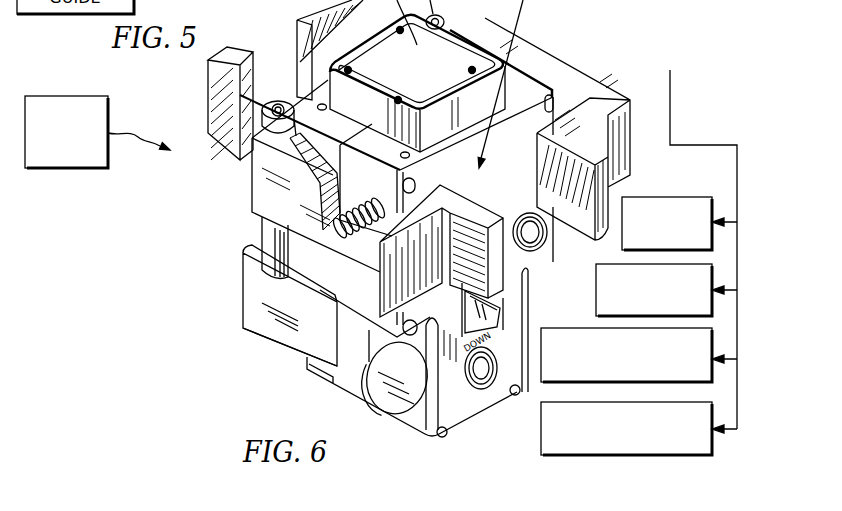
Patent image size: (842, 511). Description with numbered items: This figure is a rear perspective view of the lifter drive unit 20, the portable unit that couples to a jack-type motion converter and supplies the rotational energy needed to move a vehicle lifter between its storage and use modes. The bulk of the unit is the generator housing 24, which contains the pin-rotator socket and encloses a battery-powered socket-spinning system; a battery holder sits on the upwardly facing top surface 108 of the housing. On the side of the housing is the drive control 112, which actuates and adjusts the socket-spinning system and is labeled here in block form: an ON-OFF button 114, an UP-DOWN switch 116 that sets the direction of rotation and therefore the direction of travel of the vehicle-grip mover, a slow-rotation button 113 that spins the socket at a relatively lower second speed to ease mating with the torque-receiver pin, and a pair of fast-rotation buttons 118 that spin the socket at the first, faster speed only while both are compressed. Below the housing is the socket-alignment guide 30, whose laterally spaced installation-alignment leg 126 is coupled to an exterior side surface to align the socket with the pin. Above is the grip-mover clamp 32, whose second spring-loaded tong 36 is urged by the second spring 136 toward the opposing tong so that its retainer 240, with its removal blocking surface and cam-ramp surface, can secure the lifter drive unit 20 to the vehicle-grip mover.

The lifter drive unit 20 is at (51, 96).
The generator housing 24 is at (252, 230).
The socket-alignment guide 30 is at (233, 282).
The grip-mover clamp 32 is at (287, 54).
The second spring-loaded tong 36 is at (216, 160).
The top surface 108 is at (528, 88).
The drive control 112 is at (697, 242).
The slow-rotation button 113 is at (542, 362).
The ON-OFF button 114 is at (622, 228).
The UP-DOWN switch 116 is at (495, 308).
The fast-rotation buttons 118 is at (385, 394).
The installation-alignment leg 126 is at (250, 346).
The second spring 136 is at (360, 207).
The retainer 240 is at (227, 48).